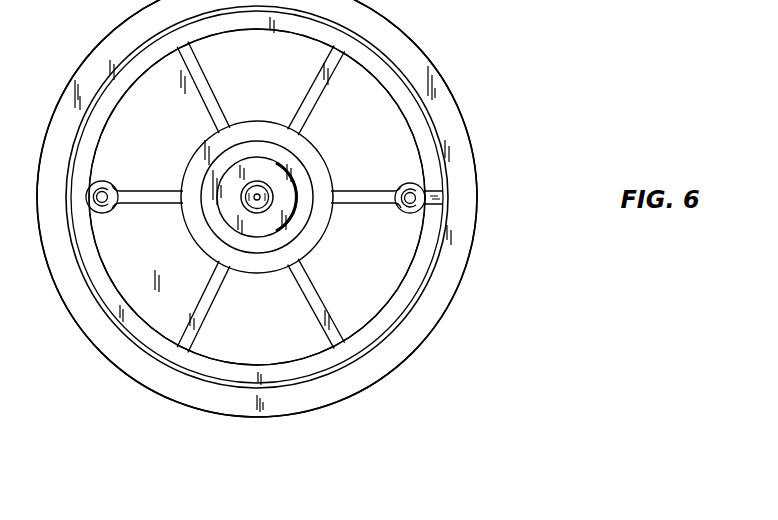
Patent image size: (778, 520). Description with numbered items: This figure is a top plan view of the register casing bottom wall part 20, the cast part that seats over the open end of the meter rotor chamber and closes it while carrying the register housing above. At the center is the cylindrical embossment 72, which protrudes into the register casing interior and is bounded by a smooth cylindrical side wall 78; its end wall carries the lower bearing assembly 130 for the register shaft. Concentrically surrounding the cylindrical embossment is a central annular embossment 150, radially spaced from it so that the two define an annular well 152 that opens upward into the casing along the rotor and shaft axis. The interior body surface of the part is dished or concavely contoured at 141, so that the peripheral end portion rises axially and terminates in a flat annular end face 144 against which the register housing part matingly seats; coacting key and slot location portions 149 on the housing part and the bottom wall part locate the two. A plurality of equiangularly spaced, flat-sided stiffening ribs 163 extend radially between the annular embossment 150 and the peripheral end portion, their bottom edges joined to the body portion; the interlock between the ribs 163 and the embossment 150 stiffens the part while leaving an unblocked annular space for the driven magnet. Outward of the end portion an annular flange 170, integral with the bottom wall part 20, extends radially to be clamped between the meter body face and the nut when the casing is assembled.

The bottom wall part 20 is at (436, 58).
The annular flange 170 is at (476, 174).
The annular end face 144 is at (428, 248).
The dished interior surface 141 is at (151, 288).
The key and slot location portions 149 is at (442, 200).
The stiffening ribs 163 is at (327, 86).
The central annular embossment 150 is at (273, 121).
The annular well 152 is at (298, 226).
The cylindrical side wall 78 is at (260, 238).
The cylindrical embossment 72 is at (298, 186).
The lower bearing assembly 130 is at (275, 181).